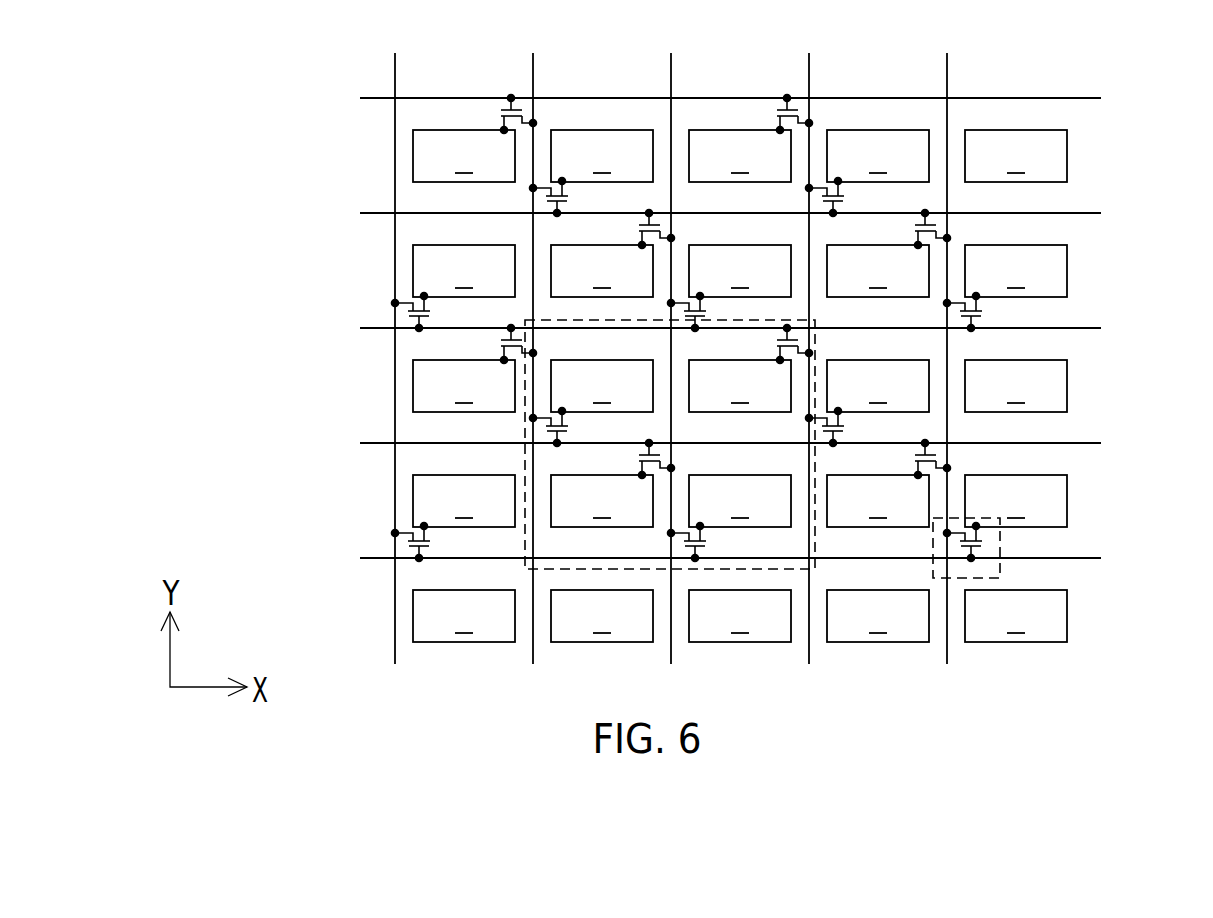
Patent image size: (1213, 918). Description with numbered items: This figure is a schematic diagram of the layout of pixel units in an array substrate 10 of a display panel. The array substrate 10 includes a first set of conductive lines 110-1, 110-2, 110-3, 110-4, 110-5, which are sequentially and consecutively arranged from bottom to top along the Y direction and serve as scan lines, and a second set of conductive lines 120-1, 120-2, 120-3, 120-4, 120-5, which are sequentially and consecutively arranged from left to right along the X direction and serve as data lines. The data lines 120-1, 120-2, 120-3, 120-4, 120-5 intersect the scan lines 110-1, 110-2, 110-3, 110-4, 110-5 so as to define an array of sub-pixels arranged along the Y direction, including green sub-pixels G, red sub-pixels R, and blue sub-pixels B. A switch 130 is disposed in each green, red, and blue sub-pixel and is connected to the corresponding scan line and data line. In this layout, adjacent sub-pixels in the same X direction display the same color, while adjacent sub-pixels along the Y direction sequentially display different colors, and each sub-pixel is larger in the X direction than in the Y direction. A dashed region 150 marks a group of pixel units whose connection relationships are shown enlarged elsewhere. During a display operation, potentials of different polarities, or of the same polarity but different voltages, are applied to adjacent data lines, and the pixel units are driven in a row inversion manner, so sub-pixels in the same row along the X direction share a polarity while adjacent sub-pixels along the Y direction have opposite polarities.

The array substrate 10 is at (230, 77).
The conductive line 110-1 is at (683, 559).
The conductive line 110-2 is at (683, 444).
The conductive line 110-3 is at (683, 329).
The conductive line 110-4 is at (683, 214).
The conductive line 110-5 is at (683, 99).
The conductive line 120-1 is at (395, 336).
The conductive line 120-2 is at (533, 336).
The conductive line 120-3 is at (671, 336).
The conductive line 120-4 is at (809, 336).
The conductive line 120-5 is at (947, 336).
The switch 130 is at (1001, 537).
The region 150 is at (525, 426).